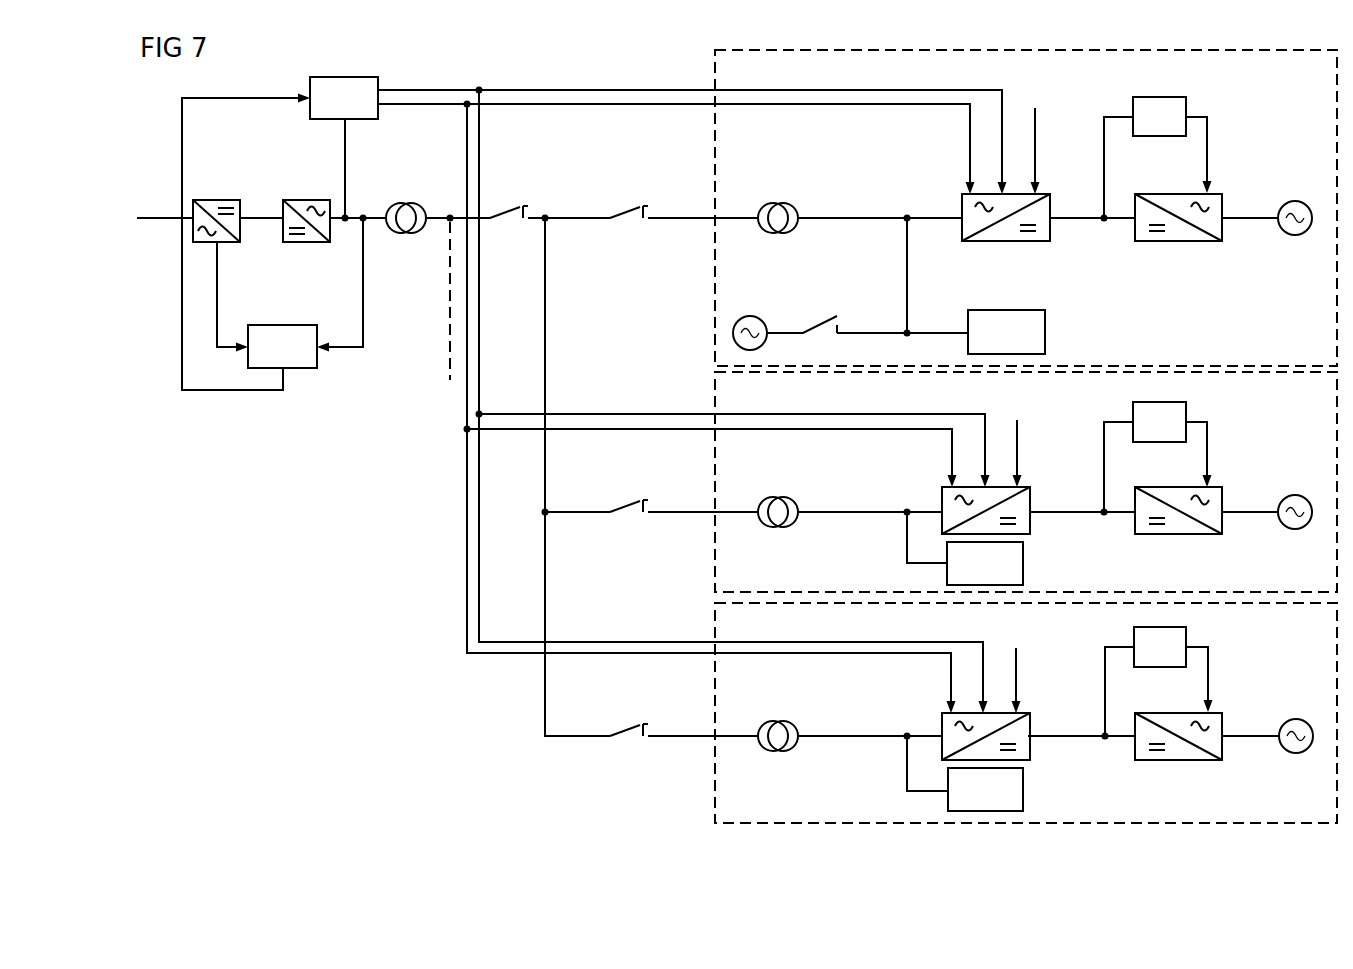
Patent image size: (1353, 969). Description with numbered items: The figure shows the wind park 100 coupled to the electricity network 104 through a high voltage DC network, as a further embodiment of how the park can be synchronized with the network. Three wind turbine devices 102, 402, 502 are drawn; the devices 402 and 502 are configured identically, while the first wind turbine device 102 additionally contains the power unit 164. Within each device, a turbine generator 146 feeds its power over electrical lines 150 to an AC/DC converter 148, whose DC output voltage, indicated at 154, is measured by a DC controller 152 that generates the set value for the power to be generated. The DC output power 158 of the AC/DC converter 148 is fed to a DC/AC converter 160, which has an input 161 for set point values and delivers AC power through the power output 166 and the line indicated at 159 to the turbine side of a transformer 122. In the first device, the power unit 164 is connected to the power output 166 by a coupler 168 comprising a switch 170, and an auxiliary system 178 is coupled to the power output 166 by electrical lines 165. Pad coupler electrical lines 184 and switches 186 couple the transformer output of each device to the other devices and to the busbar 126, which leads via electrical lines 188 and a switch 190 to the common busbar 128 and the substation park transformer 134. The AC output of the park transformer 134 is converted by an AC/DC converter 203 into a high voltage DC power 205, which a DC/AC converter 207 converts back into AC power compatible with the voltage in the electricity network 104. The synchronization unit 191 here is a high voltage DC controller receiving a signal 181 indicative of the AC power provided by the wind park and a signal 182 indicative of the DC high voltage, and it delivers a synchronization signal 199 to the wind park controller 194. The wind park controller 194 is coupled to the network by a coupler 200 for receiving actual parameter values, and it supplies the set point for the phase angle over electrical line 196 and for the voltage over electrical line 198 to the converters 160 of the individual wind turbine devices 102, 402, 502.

The wind park 100 is at (667, 82).
The wind turbine device 102 is at (715, 280).
The electricity network 104 is at (160, 216).
The transformer 122 is at (780, 204).
The busbar 126 is at (547, 561).
The common busbar 128 is at (450, 372).
The substation park transformer 134 is at (412, 234).
The turbine generator 146 is at (1293, 201).
The AC/DC converter 148 is at (1177, 241).
The electrical lines 150 is at (1247, 218).
The DC controller 152 is at (1186, 104).
The DC voltage at the output of the AC/DC converter 154 is at (1104, 172).
The DC output power 158 is at (1071, 218).
The converter output line 159 is at (864, 218).
The DC/AC converter 160 is at (1004, 241).
The input 161 is at (1041, 192).
The power unit 164 is at (750, 316).
The electrical lines 165 is at (934, 333).
The power output 166 is at (960, 216).
The coupler 168 is at (865, 333).
The switch 170 is at (815, 320).
The auxiliary system 178 is at (1045, 334).
The signal indicative of the AC power provided by the wind park 181 is at (363, 300).
The signal indicative of the DC high voltage 182 is at (217, 290).
The electrical lines 184 is at (684, 218).
The switches 186 is at (622, 208).
The electrical lines 188 is at (578, 218).
The switches 190 is at (506, 210).
The synchronization unit 191 is at (296, 368).
The wind park controller 194 is at (310, 88).
The electrical line 196 is at (548, 104).
The electrical line 198 is at (552, 90).
The synchronization signal 199 is at (234, 390).
The coupler 200 is at (355, 131).
The AC/DC converter 203 is at (322, 200).
The high voltage DC power 205 is at (264, 218).
The DC/AC converter 207 is at (214, 200).
The wind turbine device 402 is at (715, 560).
The wind turbine device 502 is at (715, 789).